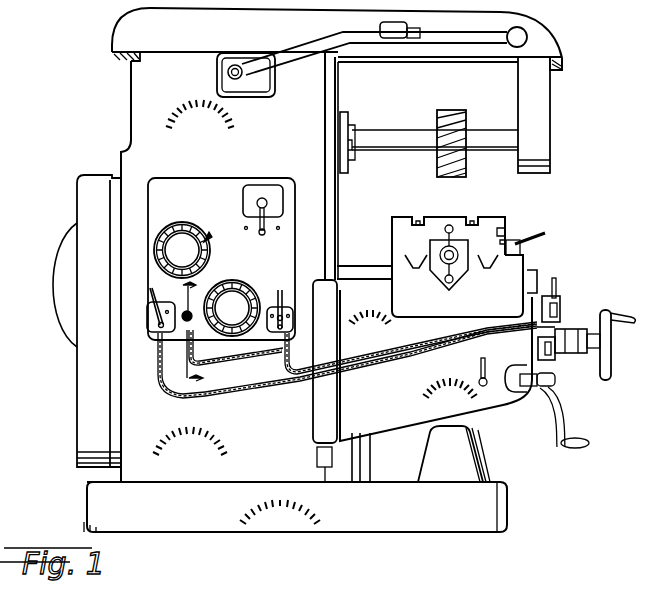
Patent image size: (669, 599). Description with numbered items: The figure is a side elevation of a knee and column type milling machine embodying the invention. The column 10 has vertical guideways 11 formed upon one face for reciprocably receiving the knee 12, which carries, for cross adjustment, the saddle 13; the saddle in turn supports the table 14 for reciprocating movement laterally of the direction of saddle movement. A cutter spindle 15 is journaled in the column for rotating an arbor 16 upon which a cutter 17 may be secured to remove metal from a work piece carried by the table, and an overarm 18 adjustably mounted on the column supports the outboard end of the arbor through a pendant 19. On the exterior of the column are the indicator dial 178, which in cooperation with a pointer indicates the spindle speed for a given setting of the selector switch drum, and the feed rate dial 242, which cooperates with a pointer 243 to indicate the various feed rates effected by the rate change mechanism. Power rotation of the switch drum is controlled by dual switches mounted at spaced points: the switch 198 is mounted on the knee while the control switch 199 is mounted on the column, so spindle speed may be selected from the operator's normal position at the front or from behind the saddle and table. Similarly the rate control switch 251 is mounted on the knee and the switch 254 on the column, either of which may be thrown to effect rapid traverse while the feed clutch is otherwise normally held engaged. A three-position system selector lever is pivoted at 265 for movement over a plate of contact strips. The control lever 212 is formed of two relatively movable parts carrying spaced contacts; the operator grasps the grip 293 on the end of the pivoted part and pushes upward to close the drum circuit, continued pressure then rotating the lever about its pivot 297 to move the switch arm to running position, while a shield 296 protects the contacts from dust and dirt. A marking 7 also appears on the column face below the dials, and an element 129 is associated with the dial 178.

The section indicator 7 is at (225, 334).
The column 10 is at (131, 128).
The vertical guideways 11 is at (335, 97).
The knee 12 is at (503, 397).
The saddle 13 is at (517, 270).
The table 14 is at (490, 223).
The cutter spindle 15 is at (350, 127).
The arbor 16 is at (421, 120).
The cutter 17 is at (455, 110).
The overarm 18 is at (550, 47).
The pendant 19 is at (547, 98).
The dial knob 129 is at (230, 298).
The indicator dial 178 is at (272, 262).
The switch 198 is at (557, 283).
The control switch 199 is at (279, 290).
The control lever 212 is at (351, 62).
The feed rate dial 242 is at (176, 240).
The pointer 243 is at (223, 221).
The rate control switch 251 is at (550, 330).
The switch 254 is at (148, 302).
The pivot 265 is at (264, 200).
The grip 293 is at (520, 47).
The shield 296 is at (400, 38).
The pivot 297 is at (228, 72).